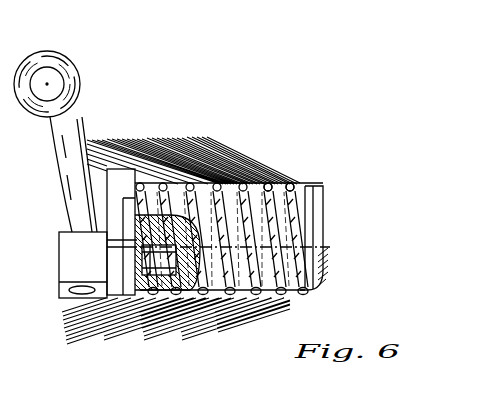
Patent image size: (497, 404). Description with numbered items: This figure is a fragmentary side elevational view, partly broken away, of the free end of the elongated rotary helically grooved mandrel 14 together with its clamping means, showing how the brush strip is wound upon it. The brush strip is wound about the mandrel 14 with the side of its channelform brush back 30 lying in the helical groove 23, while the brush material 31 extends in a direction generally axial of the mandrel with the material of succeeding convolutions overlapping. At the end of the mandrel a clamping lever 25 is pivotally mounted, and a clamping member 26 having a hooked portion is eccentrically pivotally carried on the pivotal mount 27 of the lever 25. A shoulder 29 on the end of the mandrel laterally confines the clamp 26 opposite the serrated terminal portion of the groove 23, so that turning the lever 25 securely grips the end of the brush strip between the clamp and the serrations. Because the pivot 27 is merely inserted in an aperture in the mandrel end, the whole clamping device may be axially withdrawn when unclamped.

The mandrel 14 is at (323, 245).
The groove 23 is at (317, 211).
The clamping lever 25 is at (72, 83).
The clamping member 26 is at (115, 197).
The pivotal mount 27 is at (185, 252).
The shoulder 29 is at (128, 210).
The brush back 30 is at (290, 183).
The brush material 31 is at (223, 153).